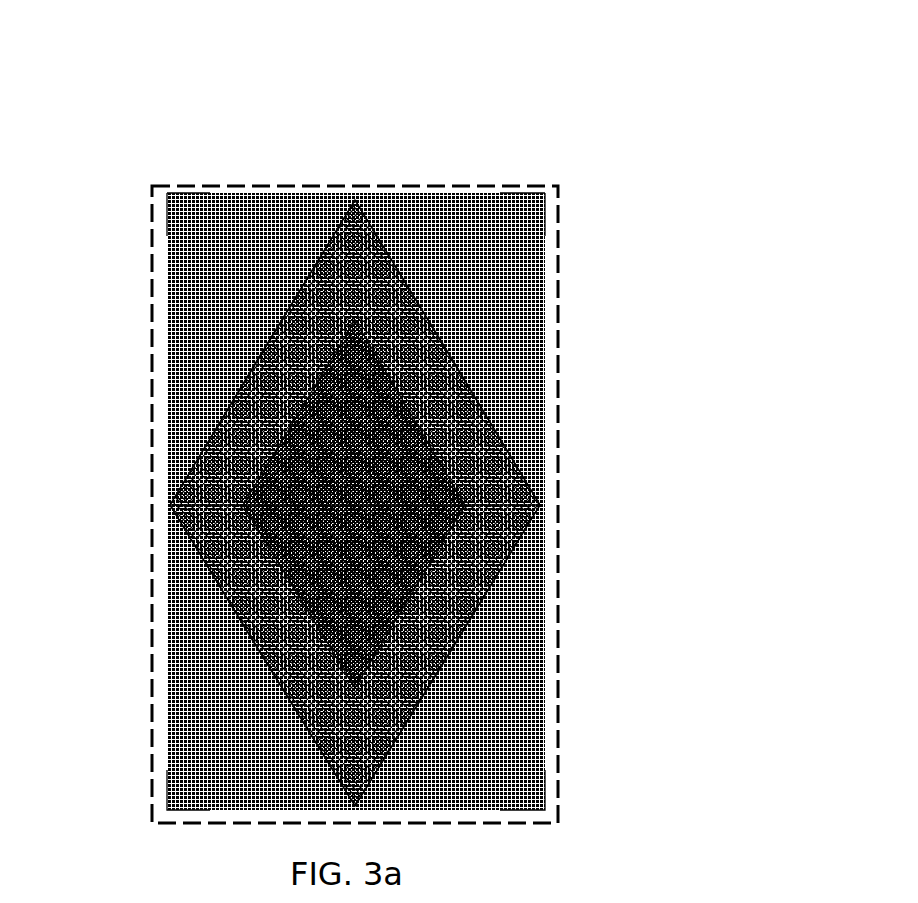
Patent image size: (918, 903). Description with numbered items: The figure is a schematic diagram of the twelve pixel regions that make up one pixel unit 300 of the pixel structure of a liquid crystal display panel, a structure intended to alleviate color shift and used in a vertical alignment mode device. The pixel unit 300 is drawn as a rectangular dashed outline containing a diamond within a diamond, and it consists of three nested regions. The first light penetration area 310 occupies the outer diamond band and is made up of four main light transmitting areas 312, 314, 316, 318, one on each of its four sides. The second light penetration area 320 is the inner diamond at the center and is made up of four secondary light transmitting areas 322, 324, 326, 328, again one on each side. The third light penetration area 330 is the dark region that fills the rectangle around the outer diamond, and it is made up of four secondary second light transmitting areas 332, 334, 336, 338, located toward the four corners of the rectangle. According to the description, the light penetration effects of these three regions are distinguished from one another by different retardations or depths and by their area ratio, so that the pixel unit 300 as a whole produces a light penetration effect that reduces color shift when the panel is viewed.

The pixel unit 300 is at (346, 417).
The first light penetration area 310 is at (355, 503).
The main light transmitting area 312 is at (555, 412).
The main light transmitting area 314 is at (166, 415).
The main light transmitting area 316 is at (167, 592).
The main light transmitting area 318 is at (553, 590).
The second light penetration area 320 is at (172, 462).
The secondary light transmitting area 322 is at (545, 345).
The secondary light transmitting area 324 is at (152, 347).
The secondary light transmitting area 326 is at (168, 676).
The secondary light transmitting area 328 is at (555, 665).
The third light penetration area 330 is at (345, 502).
The secondary second light transmitting area 332 is at (545, 275).
The secondary second light transmitting area 334 is at (165, 272).
The secondary second light transmitting area 336 is at (165, 748).
The secondary second light transmitting area 338 is at (555, 740).